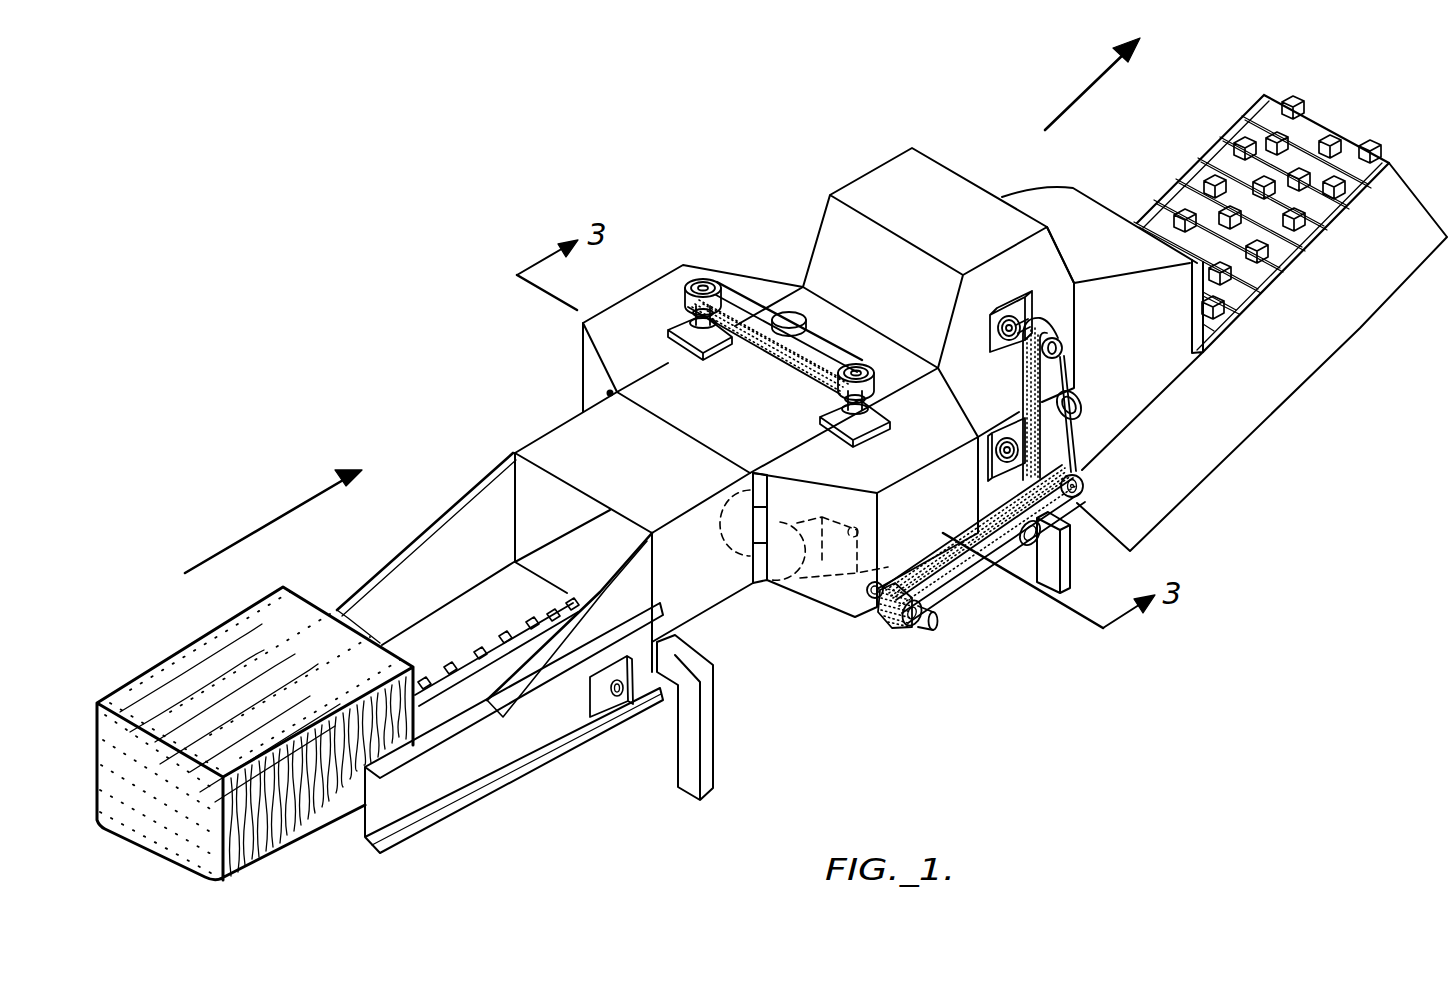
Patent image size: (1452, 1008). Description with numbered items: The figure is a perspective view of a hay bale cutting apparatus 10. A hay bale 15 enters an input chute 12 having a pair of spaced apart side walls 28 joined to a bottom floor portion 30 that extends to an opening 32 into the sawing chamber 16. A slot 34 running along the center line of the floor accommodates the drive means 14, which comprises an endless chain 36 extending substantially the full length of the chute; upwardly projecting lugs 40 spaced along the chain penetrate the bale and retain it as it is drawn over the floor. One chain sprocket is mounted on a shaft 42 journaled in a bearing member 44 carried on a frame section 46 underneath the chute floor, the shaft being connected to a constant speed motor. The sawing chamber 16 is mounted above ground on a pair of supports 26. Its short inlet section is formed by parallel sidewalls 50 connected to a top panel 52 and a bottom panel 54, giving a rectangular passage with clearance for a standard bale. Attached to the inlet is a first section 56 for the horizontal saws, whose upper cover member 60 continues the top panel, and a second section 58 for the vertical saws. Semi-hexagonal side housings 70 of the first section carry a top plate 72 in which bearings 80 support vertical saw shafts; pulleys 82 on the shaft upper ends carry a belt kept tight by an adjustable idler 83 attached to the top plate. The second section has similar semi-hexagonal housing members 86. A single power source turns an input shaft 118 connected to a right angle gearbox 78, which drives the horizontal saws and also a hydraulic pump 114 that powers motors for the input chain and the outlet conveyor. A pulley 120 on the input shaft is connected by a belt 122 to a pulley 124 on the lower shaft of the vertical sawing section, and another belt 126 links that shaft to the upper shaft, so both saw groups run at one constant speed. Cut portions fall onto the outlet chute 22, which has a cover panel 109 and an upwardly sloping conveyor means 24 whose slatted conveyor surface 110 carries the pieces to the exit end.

The apparatus 10 is at (430, 304).
The input chute 12 is at (519, 740).
The drive means 14 is at (483, 625).
The hay bale 15 is at (282, 855).
The sawing chamber 16 is at (758, 205).
The outlet chute 22 is at (1238, 364).
The conveyor means 24 is at (1316, 130).
The supports 26 is at (710, 722).
The side walls 28 is at (606, 607).
The floor portion 30 is at (490, 607).
The opening 32 is at (522, 525).
The slot 34 is at (569, 598).
The endless chain 36 is at (448, 672).
The lugs 40 is at (500, 634).
The shaft 42 is at (624, 715).
The bearing member 44 is at (621, 697).
The frame section 46 is at (528, 770).
The sidewalls 50 is at (520, 521).
The top panel 52 is at (610, 478).
The bottom panel 54 is at (581, 556).
The first section 56 is at (812, 598).
The second section 58 is at (862, 175).
The upper cover member 60 is at (743, 429).
The side housings 70 is at (580, 335).
The top plate 72 is at (613, 336).
The right angle gearbox 78 is at (875, 600).
The bearings 80 is at (721, 352).
The pulleys 82 is at (706, 283).
The adjustable idler 83 is at (809, 316).
The housing members 86 is at (916, 223).
The cover panel 109 is at (1098, 205).
The discharge conveyor 110 is at (1226, 148).
The hydraulic pump 114 is at (745, 556).
The input shaft 118 is at (936, 615).
The pulley 120 is at (906, 634).
The belt 122 is at (955, 591).
The pulley 124 is at (1083, 487).
The belt 126 is at (1020, 378).